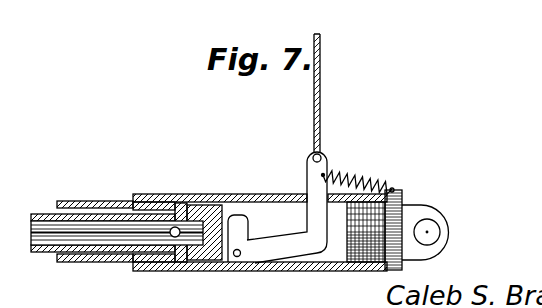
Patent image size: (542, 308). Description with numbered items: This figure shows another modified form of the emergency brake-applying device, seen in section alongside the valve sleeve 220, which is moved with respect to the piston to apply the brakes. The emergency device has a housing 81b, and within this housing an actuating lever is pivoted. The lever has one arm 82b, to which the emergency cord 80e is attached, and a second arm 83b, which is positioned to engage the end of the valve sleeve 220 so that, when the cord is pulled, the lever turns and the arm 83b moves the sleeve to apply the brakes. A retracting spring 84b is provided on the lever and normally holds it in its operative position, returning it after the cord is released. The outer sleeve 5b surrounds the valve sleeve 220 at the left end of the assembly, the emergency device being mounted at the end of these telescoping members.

The outer sleeve 5b is at (70, 261).
The valve sleeve 220 is at (126, 246).
The emergency cord 80e is at (318, 77).
The housing 81b is at (262, 199).
The arm 82b is at (293, 248).
The arm 83b is at (234, 222).
The retracting spring 84b is at (370, 186).